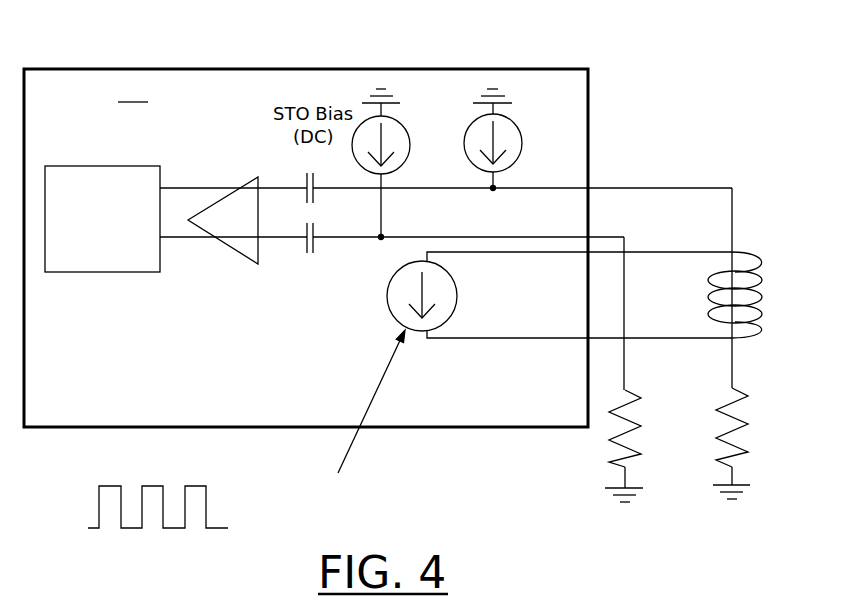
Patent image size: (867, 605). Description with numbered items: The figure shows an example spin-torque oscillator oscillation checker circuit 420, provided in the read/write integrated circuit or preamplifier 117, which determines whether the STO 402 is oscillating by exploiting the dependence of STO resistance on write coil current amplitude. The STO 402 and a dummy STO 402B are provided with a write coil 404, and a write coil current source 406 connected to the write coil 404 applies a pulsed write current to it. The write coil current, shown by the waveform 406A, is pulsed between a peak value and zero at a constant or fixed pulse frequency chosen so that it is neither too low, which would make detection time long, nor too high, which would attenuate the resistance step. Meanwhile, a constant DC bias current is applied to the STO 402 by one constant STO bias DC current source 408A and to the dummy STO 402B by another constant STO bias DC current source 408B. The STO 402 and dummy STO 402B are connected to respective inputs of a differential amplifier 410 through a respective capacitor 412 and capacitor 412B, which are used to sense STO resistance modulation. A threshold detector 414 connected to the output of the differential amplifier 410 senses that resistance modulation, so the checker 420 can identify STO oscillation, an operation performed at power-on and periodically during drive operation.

The spin-torque oscillator oscillation checker circuit 420 is at (463, 39).
The read/write integrated circuit 117 is at (100, 104).
The threshold detector 414 is at (113, 242).
The differential amplifier 410 is at (243, 183).
The capacitor 412 is at (310, 199).
The capacitor 412B is at (310, 248).
The constant STO bias DC current source 408B is at (403, 126).
The constant STO bias DC current source 408A is at (515, 124).
The write coil current source 406 is at (392, 278).
The write coil current waveform 406A is at (202, 465).
The write coil 404 is at (766, 295).
The dummy STO 402B is at (659, 446).
The spin-torque oscillator 402 is at (752, 443).